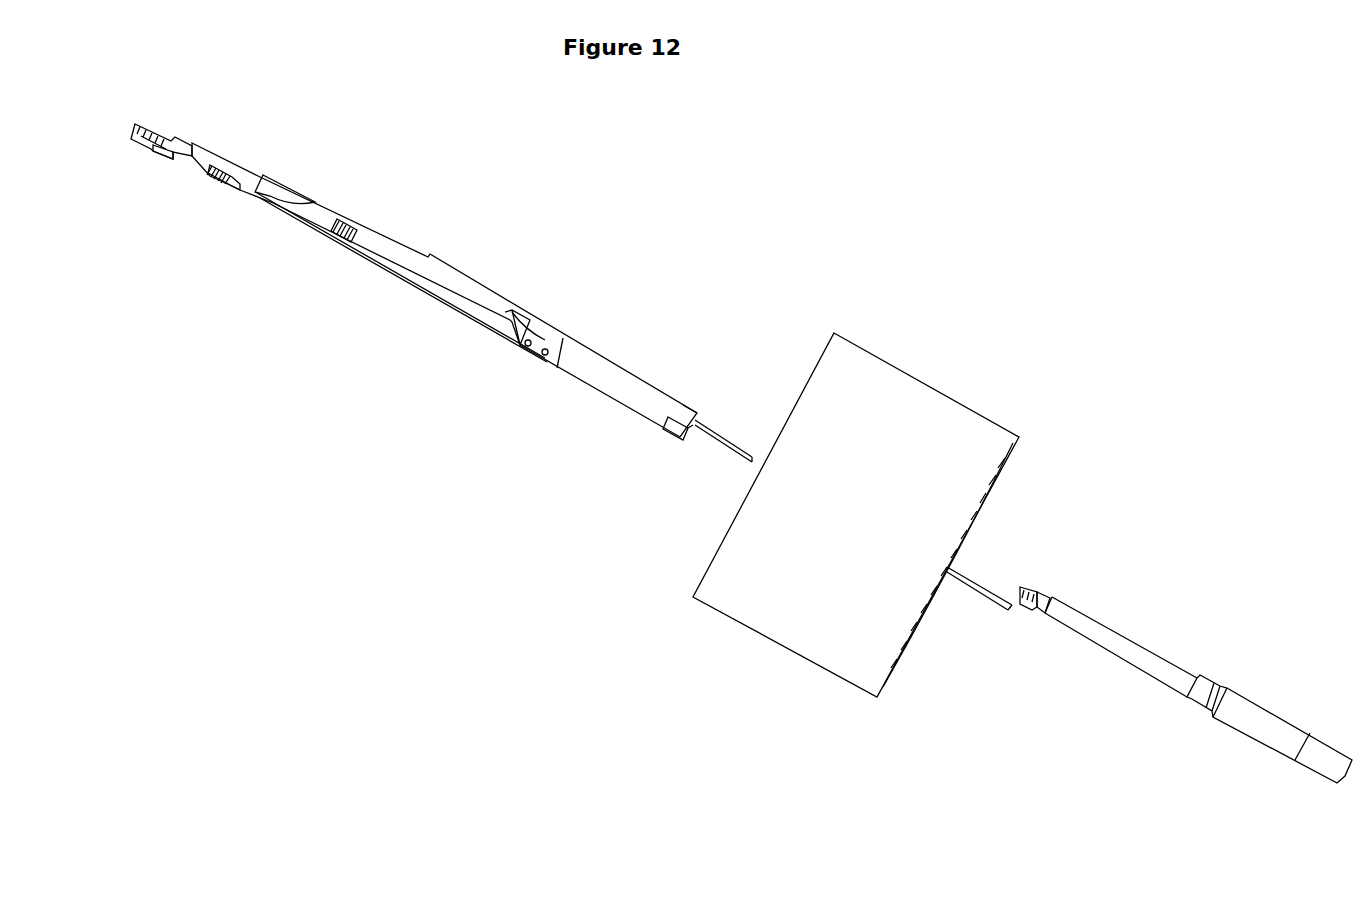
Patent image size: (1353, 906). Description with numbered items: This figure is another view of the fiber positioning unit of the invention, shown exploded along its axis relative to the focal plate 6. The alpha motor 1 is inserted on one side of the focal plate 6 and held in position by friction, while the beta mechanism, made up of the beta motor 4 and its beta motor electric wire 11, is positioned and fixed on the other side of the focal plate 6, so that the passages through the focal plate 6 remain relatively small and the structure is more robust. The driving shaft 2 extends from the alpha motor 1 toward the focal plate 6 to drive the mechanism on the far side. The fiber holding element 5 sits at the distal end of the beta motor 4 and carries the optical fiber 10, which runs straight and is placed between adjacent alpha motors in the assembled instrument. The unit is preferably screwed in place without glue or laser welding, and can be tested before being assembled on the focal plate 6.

The alpha motor 1 is at (1245, 716).
The driving shaft 2 is at (1065, 626).
The beta motor 4 is at (458, 289).
The fiber holding element 5 is at (207, 163).
The focal plate 6 is at (876, 408).
The optical fiber 10 is at (161, 159).
The beta motor electric wire 11 is at (980, 588).